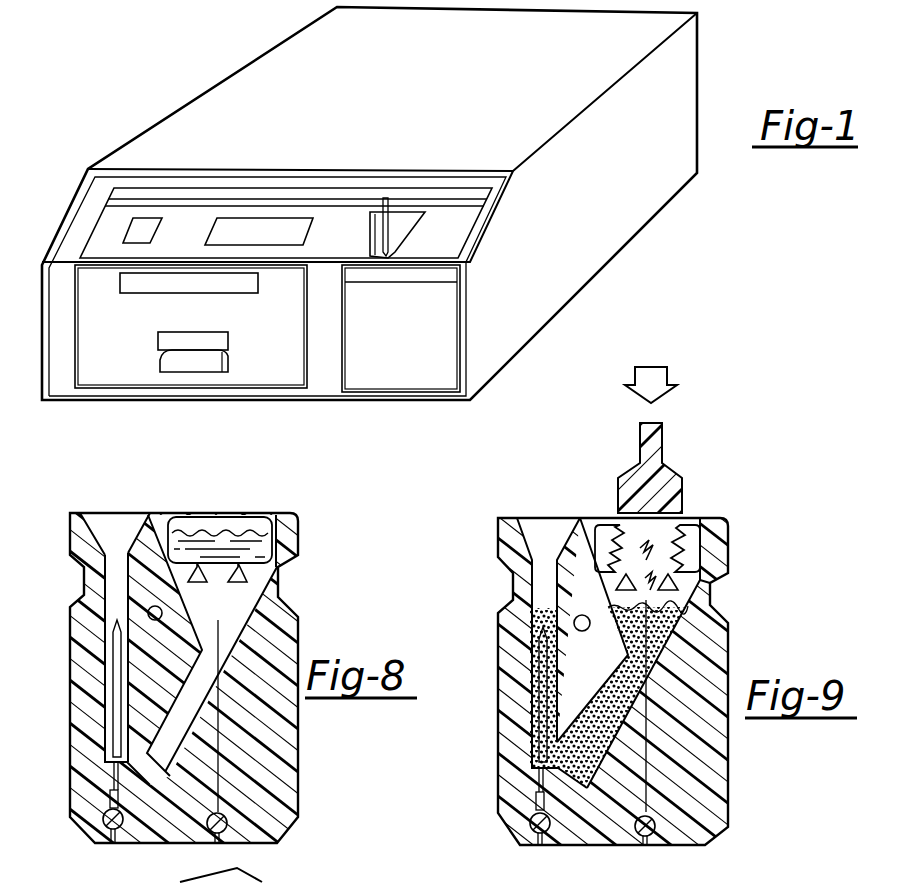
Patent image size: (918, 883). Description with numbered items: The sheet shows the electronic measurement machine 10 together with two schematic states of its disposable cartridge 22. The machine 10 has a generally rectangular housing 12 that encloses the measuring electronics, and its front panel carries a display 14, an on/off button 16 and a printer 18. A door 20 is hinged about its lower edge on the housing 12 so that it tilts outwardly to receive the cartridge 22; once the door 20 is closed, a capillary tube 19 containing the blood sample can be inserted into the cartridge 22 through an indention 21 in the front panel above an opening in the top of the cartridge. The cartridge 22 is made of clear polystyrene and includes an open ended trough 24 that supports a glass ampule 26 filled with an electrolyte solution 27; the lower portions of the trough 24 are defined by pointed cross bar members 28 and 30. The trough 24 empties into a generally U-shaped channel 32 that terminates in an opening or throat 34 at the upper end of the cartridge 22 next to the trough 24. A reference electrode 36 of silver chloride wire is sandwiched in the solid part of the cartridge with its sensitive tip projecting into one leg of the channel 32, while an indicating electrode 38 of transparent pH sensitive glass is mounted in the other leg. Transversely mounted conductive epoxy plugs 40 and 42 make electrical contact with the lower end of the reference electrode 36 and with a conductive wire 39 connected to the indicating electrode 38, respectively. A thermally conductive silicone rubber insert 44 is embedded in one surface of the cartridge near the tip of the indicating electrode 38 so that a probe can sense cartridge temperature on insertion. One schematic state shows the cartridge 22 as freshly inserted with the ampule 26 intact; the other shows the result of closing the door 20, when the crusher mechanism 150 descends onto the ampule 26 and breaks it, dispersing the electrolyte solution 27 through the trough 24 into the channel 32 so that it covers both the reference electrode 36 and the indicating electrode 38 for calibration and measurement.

In FIG. 1, the electronic measurement machine 10 is at (173, 92).
In FIG. 1, the housing 12 is at (683, 82).
In FIG. 1, the display 14 is at (238, 227).
In FIG. 1, the on/off button 16 is at (143, 223).
In FIG. 1, the printer 18 is at (168, 367).
In FIG. 1, the capillary tube 19 is at (390, 217).
In FIG. 1, the door 20 is at (437, 378).
In FIG. 1, the indention 21 is at (395, 230).
In FIG. 8, the cartridge 22 is at (280, 775).
In FIG. 9, the cartridge 22 is at (713, 773).
In FIG. 8, the trough 24 is at (170, 513).
In FIG. 8, the glass ampule 26 is at (260, 516).
In FIG. 9, the glass ampule 26 is at (685, 530).
In FIG. 8, the electrolyte solution 27 is at (203, 548).
In FIG. 8, the pointed cross bar member 28 is at (205, 530).
In FIG. 8, the pointed cross bar member 30 is at (245, 580).
In FIG. 8, the U-shaped channel 32 is at (157, 772).
In FIG. 8, the throat 34 is at (108, 512).
In FIG. 8, the reference electrode 36 is at (222, 672).
In FIG. 9, the reference electrode 36 is at (648, 647).
In FIG. 8, the indicating electrode 38 is at (115, 663).
In FIG. 9, the indicating electrode 38 is at (543, 690).
In FIG. 8, the conductive wire 39 is at (107, 764).
In FIG. 8, the electrically conductive plug 40 is at (230, 826).
In FIG. 8, the electrically conductive plug 42 is at (103, 826).
In FIG. 8, the insert 44 is at (148, 608).
In FIG. 9, the insert 44 is at (579, 616).
In FIG. 9, the crusher mechanism 150 is at (657, 478).